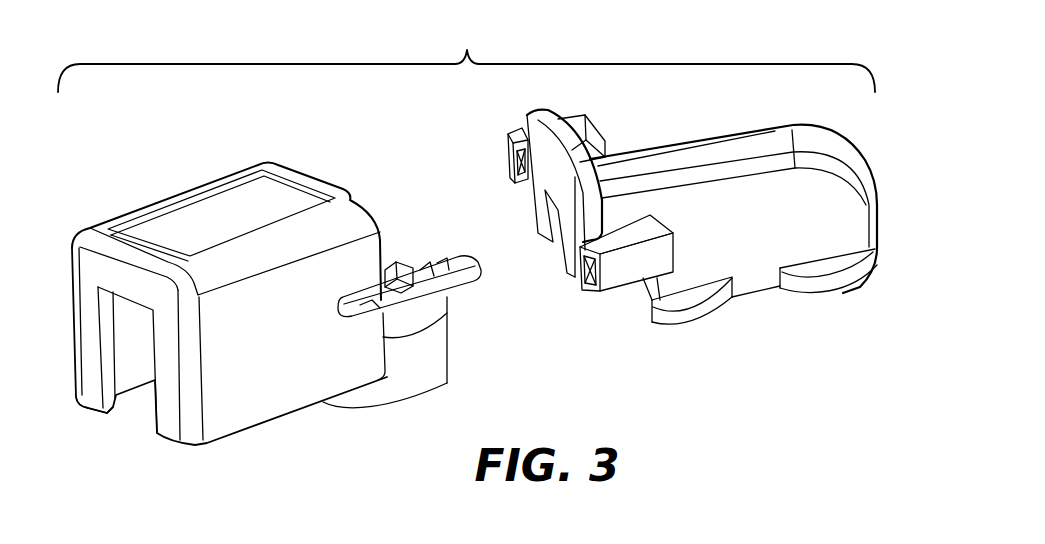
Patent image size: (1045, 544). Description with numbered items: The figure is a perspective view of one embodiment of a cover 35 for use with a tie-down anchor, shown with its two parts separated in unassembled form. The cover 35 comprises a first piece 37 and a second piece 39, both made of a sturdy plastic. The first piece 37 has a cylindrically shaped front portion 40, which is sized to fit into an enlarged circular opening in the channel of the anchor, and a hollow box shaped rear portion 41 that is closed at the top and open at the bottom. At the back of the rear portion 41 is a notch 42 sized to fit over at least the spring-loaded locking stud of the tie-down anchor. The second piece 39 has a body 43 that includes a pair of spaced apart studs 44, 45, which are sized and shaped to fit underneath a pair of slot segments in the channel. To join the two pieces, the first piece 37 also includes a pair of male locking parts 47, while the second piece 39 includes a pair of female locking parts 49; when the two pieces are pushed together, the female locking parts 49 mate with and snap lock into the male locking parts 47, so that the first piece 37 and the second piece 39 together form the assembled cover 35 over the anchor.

The cover 35 is at (453, 42).
The first piece 37 is at (320, 168).
The second piece 39 is at (898, 180).
The cylindrically shaped front portion 40 is at (420, 366).
The hollow box shaped rear portion 41 is at (183, 197).
The notch 42 is at (116, 400).
The body 43 is at (721, 208).
The stud 44 is at (680, 318).
The stud 45 is at (820, 284).
The male locking parts 47 is at (443, 266).
The female locking parts 49 is at (516, 158).